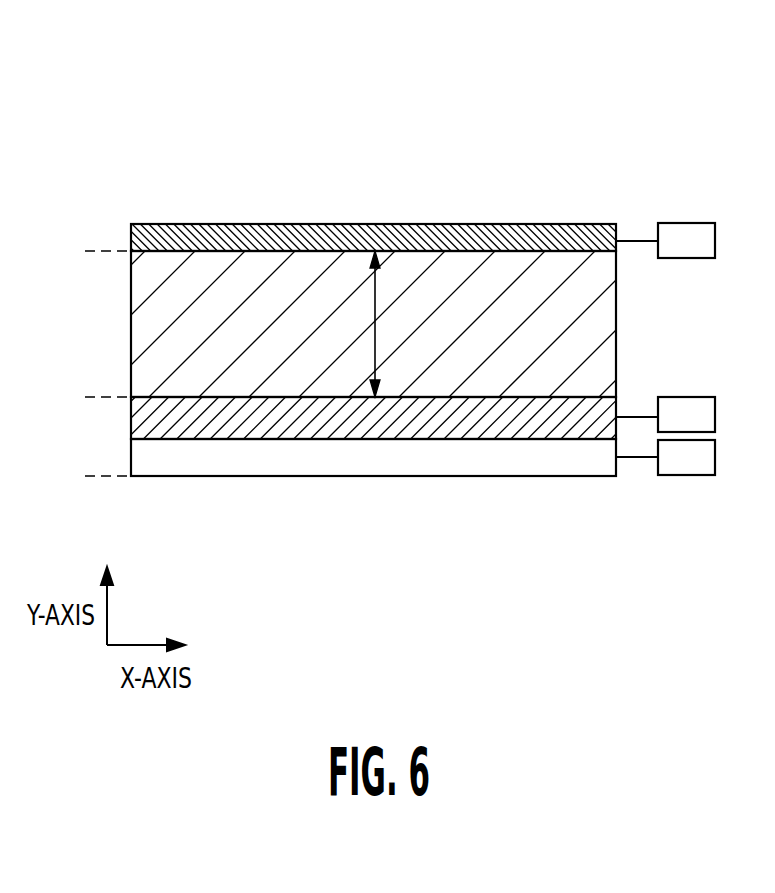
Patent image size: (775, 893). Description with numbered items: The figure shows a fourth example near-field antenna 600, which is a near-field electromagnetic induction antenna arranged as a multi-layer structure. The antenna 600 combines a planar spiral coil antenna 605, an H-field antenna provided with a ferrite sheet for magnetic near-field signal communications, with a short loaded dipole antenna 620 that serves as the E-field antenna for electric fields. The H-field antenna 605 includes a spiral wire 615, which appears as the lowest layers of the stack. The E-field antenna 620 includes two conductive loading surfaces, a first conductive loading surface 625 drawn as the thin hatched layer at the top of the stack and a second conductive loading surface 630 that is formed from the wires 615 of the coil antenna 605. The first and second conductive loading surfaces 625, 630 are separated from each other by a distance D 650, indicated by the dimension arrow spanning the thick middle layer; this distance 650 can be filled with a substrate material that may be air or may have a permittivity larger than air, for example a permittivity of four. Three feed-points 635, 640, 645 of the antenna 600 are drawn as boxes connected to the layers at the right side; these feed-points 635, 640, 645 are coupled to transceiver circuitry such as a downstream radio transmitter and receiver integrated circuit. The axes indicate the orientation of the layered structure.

The near-field antenna 600 is at (150, 107).
The planar spiral coil antenna 605 is at (85, 397).
The spiral wire 615 is at (310, 463).
The short loaded dipole antenna 620 is at (85, 252).
The first conductive loading surface 625 is at (414, 240).
The second conductive loading surface 630 is at (543, 395).
The feed-point 635 is at (682, 397).
The feed-point 640 is at (683, 475).
The feed-point 645 is at (683, 223).
The distance D 650 is at (374, 298).